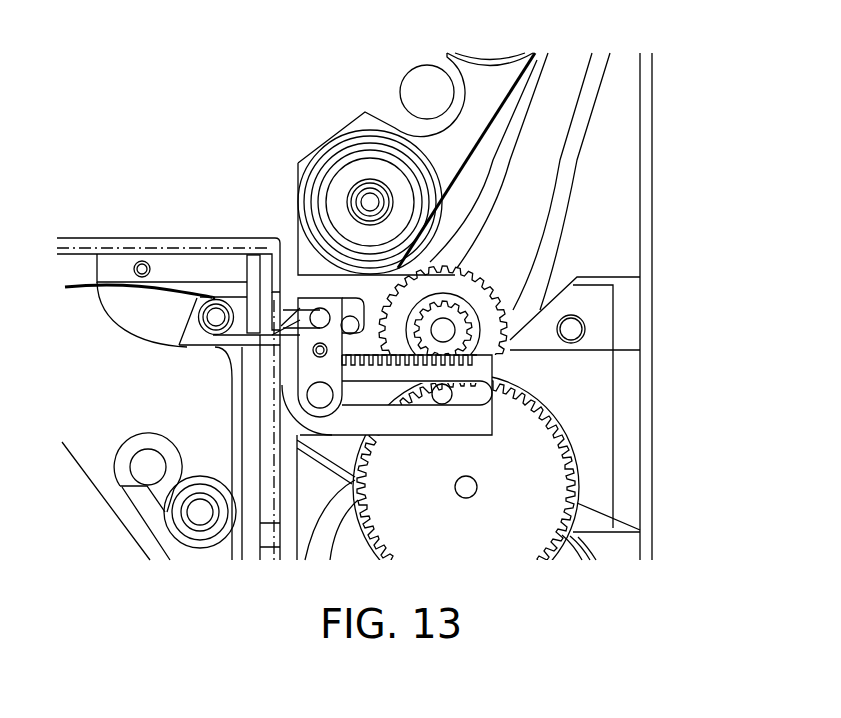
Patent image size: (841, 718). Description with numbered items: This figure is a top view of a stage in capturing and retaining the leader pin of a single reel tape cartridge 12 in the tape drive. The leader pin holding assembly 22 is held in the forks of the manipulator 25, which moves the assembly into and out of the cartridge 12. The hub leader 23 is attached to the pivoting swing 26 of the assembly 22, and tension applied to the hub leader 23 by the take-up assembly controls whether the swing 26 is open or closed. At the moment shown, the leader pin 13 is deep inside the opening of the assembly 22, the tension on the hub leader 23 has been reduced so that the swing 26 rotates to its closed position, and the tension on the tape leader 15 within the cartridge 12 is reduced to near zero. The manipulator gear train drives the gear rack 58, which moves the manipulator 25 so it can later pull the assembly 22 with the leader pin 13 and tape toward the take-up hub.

The tape cartridge 12 is at (127, 238).
The leader pin 13 is at (250, 298).
The tape leader 15 is at (87, 290).
The leader pin holding assembly 22 is at (283, 297).
The hub leader 23 is at (470, 167).
The manipulator 25 is at (293, 368).
The swing 26 is at (200, 342).
The gear rack 58 is at (495, 417).